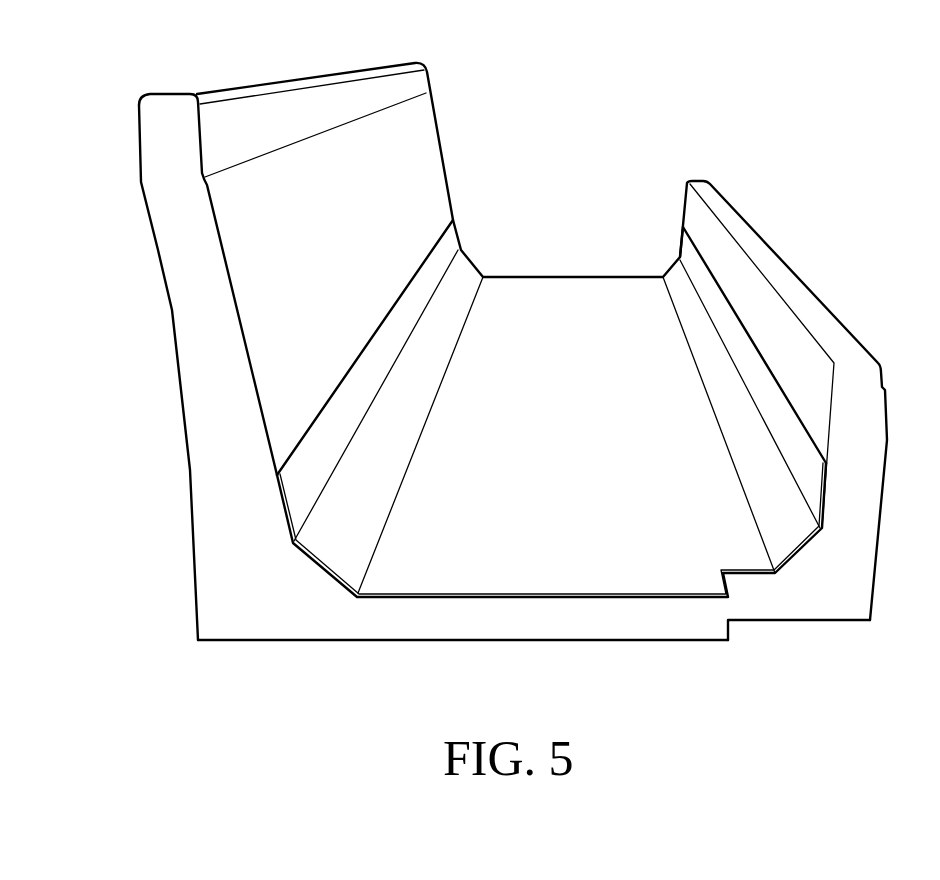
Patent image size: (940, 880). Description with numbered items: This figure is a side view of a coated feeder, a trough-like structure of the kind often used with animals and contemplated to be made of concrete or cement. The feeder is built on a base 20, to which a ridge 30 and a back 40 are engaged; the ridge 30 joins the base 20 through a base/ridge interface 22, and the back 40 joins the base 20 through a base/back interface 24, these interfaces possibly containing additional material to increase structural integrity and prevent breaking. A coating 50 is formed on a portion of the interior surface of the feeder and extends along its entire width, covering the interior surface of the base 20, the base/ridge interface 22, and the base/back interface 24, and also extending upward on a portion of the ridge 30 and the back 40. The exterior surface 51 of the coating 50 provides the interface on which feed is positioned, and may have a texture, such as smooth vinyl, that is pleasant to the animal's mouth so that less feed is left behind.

The base 20 is at (441, 618).
The base/ridge interface 22 is at (255, 610).
The base/back interface 24 is at (787, 598).
The ridge 30 is at (855, 430).
The back 40 is at (195, 323).
The coating 50 is at (577, 290).
The exterior surface 51 is at (584, 414).